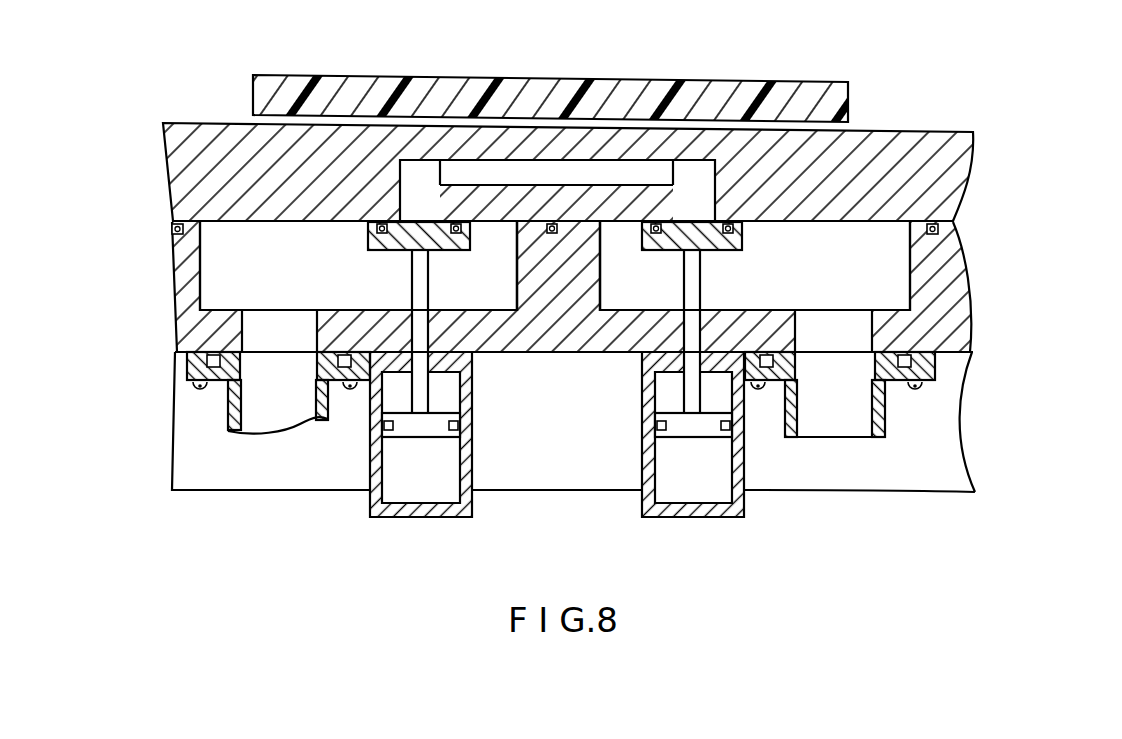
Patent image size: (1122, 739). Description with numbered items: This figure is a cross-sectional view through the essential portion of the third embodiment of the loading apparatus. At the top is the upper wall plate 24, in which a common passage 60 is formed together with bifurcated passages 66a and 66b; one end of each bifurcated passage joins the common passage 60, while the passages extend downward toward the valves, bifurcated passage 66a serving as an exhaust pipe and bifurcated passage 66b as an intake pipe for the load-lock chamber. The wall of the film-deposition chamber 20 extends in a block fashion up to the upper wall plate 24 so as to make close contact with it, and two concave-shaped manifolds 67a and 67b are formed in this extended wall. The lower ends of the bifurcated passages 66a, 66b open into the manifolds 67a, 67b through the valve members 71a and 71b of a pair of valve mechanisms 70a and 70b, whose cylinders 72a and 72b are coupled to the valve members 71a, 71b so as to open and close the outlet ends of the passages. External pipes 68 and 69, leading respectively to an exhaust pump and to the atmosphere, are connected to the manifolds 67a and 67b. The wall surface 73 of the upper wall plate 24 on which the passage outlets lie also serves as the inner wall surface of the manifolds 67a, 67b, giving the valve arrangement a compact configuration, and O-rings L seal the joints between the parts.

The film-deposition chamber 20 is at (238, 478).
The upper wall plate 24 is at (210, 130).
The common passage 60 is at (553, 176).
The bifurcated passage 66a is at (414, 176).
The bifurcated passage 66b is at (668, 176).
The manifold 67a is at (497, 303).
The manifold 67b is at (640, 300).
The external pipe 68 is at (281, 416).
The external pipe 69 is at (835, 428).
The valve mechanism 70a is at (360, 520).
The valve mechanism 70b is at (753, 507).
The valve member 71a is at (388, 250).
The valve member 71b is at (740, 250).
The cylinder 72a is at (430, 487).
The cylinder 72b is at (692, 487).
The wall surface 73 is at (262, 223).
The O-ring L is at (932, 215).